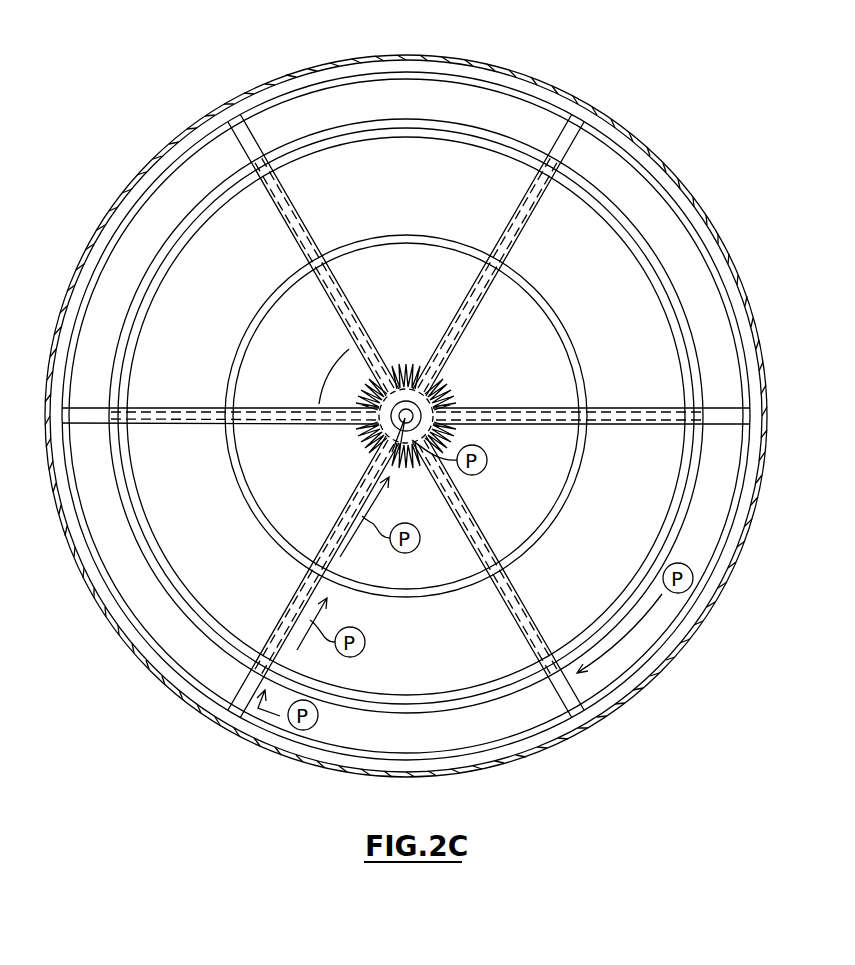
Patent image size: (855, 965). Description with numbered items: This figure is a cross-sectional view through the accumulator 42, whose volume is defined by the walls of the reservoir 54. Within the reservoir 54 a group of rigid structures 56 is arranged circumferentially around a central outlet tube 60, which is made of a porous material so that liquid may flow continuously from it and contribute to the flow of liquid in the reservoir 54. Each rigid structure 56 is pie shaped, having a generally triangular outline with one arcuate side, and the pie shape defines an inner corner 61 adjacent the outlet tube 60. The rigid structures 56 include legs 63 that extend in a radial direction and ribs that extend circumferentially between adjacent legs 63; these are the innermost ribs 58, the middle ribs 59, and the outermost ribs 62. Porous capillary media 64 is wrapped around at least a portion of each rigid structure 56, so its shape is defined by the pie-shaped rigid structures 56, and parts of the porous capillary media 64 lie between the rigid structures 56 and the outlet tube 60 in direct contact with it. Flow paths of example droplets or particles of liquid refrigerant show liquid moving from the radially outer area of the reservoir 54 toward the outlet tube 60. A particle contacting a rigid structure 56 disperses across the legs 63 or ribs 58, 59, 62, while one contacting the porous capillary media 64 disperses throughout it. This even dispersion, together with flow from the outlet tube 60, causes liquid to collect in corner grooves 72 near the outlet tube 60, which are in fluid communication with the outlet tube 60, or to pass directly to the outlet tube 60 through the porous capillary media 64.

The accumulator 42 is at (83, 40).
The reservoir 54 is at (113, 200).
The rigid structures 56 is at (97, 555).
The innermost ribs 58 is at (375, 242).
The middle ribs 59 is at (125, 463).
The outlet tube 60 is at (392, 412).
The inner corner 61 is at (328, 377).
The outermost ribs 62 is at (88, 523).
The legs 63 is at (77, 450).
The porous capillary media 64 is at (503, 693).
The corner grooves 72 is at (399, 338).